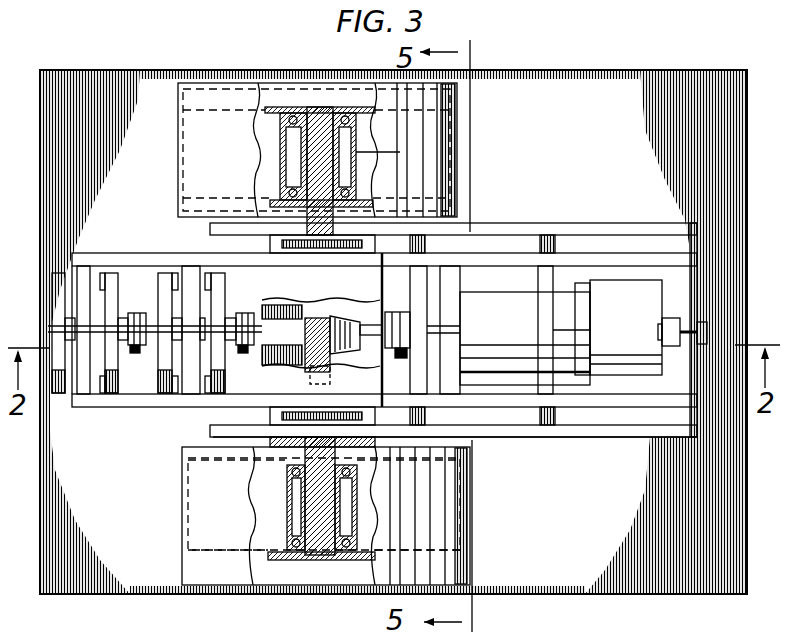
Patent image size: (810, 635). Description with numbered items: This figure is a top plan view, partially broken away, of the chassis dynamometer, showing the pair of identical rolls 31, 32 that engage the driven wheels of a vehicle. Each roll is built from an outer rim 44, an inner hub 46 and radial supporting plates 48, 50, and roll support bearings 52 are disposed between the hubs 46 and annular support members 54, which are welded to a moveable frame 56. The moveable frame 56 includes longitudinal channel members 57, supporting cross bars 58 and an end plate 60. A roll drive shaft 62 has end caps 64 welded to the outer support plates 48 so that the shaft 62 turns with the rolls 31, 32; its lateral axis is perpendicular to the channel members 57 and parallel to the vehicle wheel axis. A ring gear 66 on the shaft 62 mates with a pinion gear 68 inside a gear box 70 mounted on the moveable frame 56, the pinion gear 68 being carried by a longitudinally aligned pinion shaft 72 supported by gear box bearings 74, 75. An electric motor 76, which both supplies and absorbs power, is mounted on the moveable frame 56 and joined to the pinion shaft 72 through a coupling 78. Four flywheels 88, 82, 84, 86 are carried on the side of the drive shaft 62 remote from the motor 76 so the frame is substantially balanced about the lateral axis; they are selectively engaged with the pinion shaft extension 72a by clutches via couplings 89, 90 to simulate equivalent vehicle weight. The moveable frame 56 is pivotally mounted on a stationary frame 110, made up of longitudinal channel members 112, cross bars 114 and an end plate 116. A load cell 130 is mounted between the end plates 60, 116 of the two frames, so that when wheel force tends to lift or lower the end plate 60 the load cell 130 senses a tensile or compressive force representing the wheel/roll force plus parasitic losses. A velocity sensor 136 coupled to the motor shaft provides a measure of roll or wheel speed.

The roll 31 is at (458, 110).
The roll 32 is at (503, 245).
The outer rim 44 is at (178, 138).
The inner hub 46 is at (284, 160).
The radial supporting plate 48 is at (225, 110).
The radial supporting plate 50 is at (188, 198).
The roll support bearing 52 is at (300, 107).
The annular support member 54 is at (400, 152).
The moveable frame 56 is at (542, 243).
The longitudinal channel member 57 is at (568, 250).
The supporting cross bar 58 is at (87, 275).
The end plate 60 is at (690, 276).
The roll drive shaft 62 is at (340, 107).
The end cap 64 is at (320, 107).
The ring gear 66 is at (346, 308).
The pinion gear 68 is at (350, 356).
The gear box 70 is at (382, 293).
The pinion shaft 72 is at (362, 348).
The pinion shaft extension 72a is at (142, 315).
The gear box bearing 74 is at (387, 313).
The gear box bearing 75 is at (265, 305).
The electric motor 76 is at (508, 338).
The coupling 78 is at (398, 358).
The flywheel 82 is at (218, 394).
The flywheel 84 is at (165, 394).
The flywheel 86 is at (111, 396).
The flywheel 88 is at (58, 396).
The coupling 89 is at (245, 352).
The coupling 90 is at (138, 352).
The stationary frame 110 is at (508, 445).
The longitudinal channel member 112 is at (622, 223).
The cross bar 114 is at (212, 244).
The end plate 116 is at (667, 437).
The load cell 130 is at (710, 333).
The velocity sensor 136 is at (661, 317).